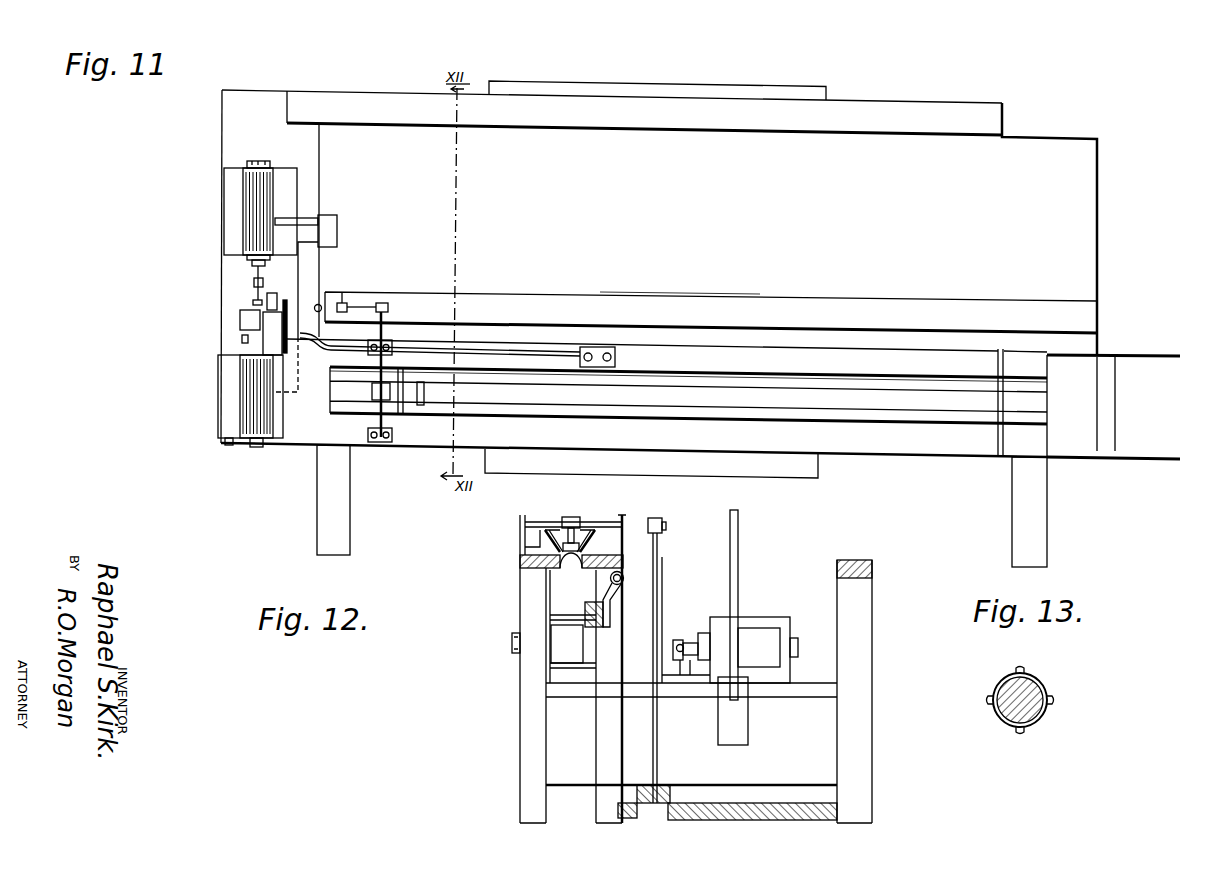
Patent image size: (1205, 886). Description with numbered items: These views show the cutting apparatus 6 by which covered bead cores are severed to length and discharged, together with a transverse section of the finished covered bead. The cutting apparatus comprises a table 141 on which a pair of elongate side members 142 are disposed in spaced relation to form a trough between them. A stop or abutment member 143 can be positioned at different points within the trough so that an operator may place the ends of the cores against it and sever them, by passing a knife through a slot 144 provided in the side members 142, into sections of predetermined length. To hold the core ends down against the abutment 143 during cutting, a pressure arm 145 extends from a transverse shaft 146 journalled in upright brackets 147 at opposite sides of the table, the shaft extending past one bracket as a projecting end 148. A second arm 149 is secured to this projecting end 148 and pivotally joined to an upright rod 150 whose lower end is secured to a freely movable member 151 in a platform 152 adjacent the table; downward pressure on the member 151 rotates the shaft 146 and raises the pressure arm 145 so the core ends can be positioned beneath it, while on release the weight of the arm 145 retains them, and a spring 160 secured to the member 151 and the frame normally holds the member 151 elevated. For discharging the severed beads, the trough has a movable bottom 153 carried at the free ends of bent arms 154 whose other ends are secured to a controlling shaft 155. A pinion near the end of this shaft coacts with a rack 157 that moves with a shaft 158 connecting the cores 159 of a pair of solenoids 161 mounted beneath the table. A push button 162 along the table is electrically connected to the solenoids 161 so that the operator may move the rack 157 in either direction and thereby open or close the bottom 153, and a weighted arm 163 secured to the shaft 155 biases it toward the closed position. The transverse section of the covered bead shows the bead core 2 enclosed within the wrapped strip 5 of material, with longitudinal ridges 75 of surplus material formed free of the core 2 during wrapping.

In FIG. 11, the table 141 is at (963, 440).
In FIG. 12, the table 141 is at (520, 561).
In FIG. 11, the elongate side members 142 is at (836, 373).
In FIG. 12, the elongate side members 142 is at (547, 530).
In FIG. 11, the stop or abutment member 143 is at (404, 378).
In FIG. 11, the slot 144 is at (998, 353).
In FIG. 11, the pressure arm 145 is at (412, 408).
In FIG. 12, the pressure arm 145 is at (575, 514).
In FIG. 11, the transverse shaft 146 is at (371, 424).
In FIG. 12, the transverse shaft 146 is at (598, 524).
In FIG. 12, the upright brackets 147 is at (520, 539).
In FIG. 11, the projecting end of shaft 148 is at (388, 318).
In FIG. 12, the projecting end of shaft 148 is at (642, 514).
In FIG. 11, the second arm 149 is at (368, 304).
In FIG. 12, the second arm 149 is at (672, 516).
In FIG. 11, the upright rod 150 is at (341, 303).
In FIG. 12, the upright rod 150 is at (658, 543).
In FIG. 11, the freely movable member 151 is at (675, 310).
In FIG. 12, the freely movable member 151 is at (665, 786).
In FIG. 12, the platform 152 is at (770, 803).
In FIG. 11, the movable bottom 153 is at (838, 405).
In FIG. 12, the movable bottom 153 is at (587, 606).
In FIG. 12, the bent arms 154 is at (612, 592).
In FIG. 11, the controlling shaft 155 is at (245, 338).
In FIG. 12, the controlling shaft 155 is at (610, 579).
In FIG. 11, the rack 157 is at (283, 300).
In FIG. 11, the shaft 158 is at (257, 292).
In FIG. 11, the cores 159 is at (247, 263).
In FIG. 11, the spring 160 is at (319, 304).
In FIG. 11, the solenoids 161 is at (243, 203).
In FIG. 12, the solenoids 161 is at (555, 648).
In FIG. 11, the push button 162 is at (586, 348).
In FIG. 11, the weighted arm 163 is at (247, 330).
In FIG. 11, the cutting apparatus 6 is at (1034, 419).
In FIG. 13, the longitudinal ridges 75 is at (987, 697).
In FIG. 13, the strips of material 5 is at (1032, 673).
In FIG. 13, the continuous lengths of bead core material 2 is at (1040, 692).